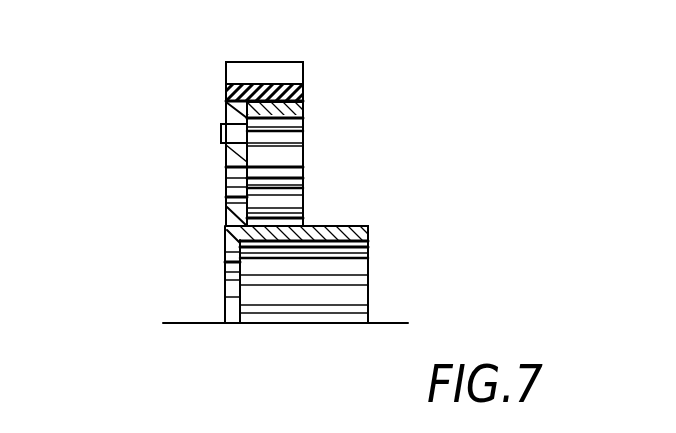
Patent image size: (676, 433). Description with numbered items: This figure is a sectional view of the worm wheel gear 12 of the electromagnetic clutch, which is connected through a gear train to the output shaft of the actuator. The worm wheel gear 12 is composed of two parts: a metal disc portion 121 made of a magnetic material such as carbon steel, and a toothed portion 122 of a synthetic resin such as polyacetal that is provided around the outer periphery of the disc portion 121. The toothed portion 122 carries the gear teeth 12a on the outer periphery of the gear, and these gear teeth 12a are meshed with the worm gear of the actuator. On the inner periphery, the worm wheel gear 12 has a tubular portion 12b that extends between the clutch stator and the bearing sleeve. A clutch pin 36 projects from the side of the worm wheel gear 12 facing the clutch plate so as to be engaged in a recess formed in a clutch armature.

The worm wheel gear 12 is at (304, 173).
The gear teeth 12a is at (283, 73).
The tubular portion 12b is at (352, 230).
The disc portion 121 is at (232, 228).
The toothed portion 122 is at (226, 100).
The clutch pin 36 is at (226, 133).